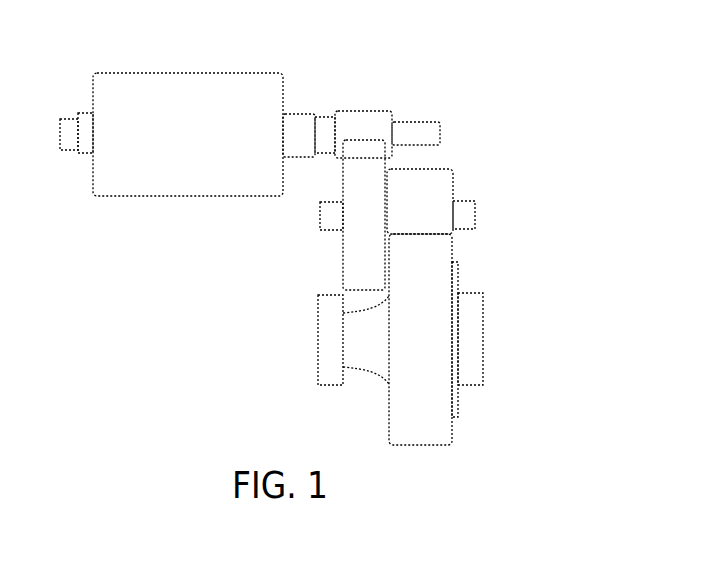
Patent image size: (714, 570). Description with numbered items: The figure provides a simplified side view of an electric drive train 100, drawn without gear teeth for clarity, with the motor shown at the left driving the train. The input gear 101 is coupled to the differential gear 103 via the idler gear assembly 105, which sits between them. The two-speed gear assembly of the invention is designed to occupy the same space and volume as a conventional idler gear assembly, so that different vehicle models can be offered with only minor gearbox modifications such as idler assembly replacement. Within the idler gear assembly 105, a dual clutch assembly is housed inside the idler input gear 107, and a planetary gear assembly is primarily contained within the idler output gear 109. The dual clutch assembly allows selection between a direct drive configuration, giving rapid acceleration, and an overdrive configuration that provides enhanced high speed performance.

The electric drive train 100 is at (325, 226).
The input gear 101 is at (367, 125).
The differential gear 103 is at (428, 325).
The idler gear assembly 105 is at (500, 214).
The idler input gear 107 is at (362, 213).
The idler output gear 109 is at (422, 215).